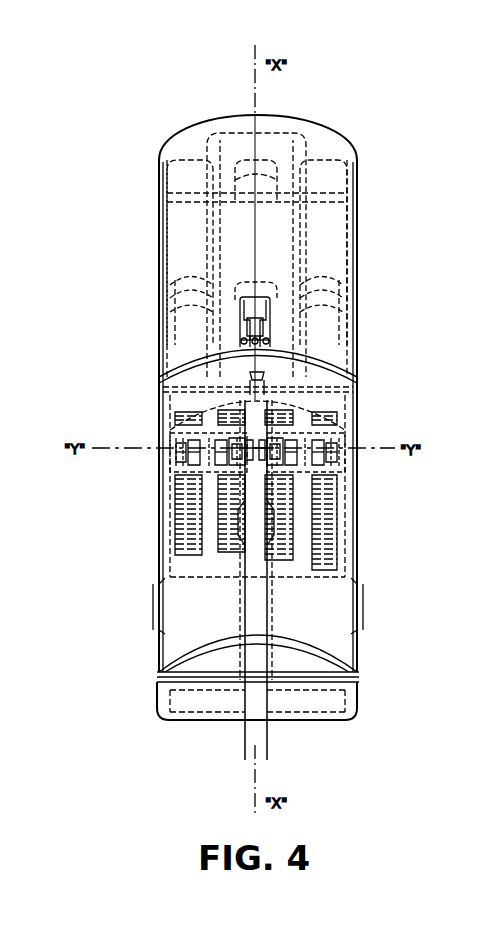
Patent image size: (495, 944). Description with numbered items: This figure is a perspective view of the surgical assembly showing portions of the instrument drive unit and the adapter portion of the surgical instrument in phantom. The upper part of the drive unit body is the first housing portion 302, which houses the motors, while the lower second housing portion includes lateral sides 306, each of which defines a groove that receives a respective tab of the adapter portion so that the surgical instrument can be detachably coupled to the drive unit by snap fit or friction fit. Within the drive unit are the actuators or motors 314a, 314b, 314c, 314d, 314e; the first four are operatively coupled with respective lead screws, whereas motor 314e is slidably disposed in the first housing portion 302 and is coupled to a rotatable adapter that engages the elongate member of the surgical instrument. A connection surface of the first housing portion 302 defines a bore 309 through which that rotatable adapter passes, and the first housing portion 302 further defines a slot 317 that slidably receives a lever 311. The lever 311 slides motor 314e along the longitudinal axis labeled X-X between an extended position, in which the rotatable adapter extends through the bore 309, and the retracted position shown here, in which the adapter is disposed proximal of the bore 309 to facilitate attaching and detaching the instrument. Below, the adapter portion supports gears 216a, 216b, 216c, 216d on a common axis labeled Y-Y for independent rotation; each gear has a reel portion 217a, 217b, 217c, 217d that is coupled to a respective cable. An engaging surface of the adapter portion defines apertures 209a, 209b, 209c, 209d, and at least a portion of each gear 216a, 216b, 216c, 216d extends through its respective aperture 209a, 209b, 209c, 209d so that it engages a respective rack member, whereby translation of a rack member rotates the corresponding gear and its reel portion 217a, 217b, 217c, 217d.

The first housing portion 302 is at (343, 140).
The lateral sides 306 is at (160, 690).
The bore 309 is at (263, 375).
The lever 311 is at (265, 305).
The slot 317 is at (268, 322).
The motor 314a is at (177, 330).
The motor 314b is at (230, 282).
The motor 314c is at (300, 282).
The motor 314d is at (340, 290).
The motor 314e is at (268, 218).
The aperture 209a is at (225, 478).
The aperture 209b is at (187, 483).
The aperture 209c is at (272, 470).
The aperture 209d is at (313, 478).
The gear 216a is at (200, 462).
The gear 216b is at (226, 443).
The gear 216c is at (292, 460).
The gear 216d is at (318, 437).
The reel portion 217a is at (193, 455).
The reel portion 217b is at (235, 447).
The reel portion 217c is at (280, 462).
The reel portion 217d is at (325, 445).